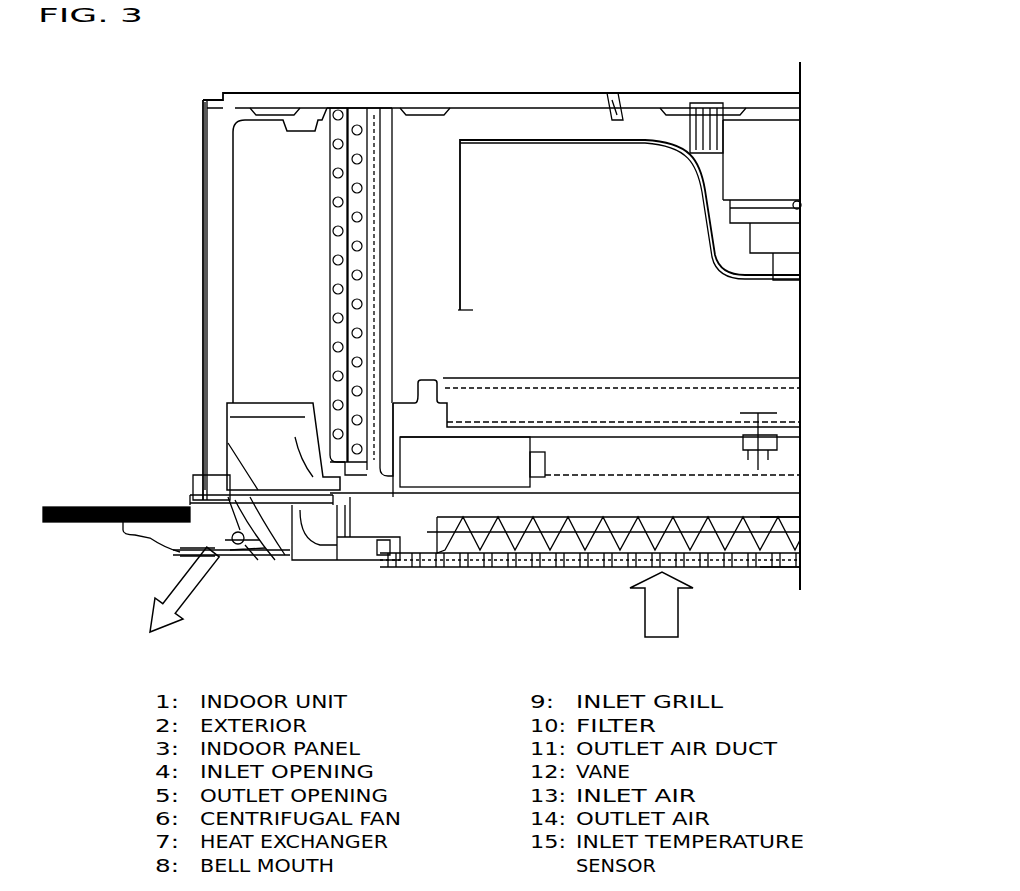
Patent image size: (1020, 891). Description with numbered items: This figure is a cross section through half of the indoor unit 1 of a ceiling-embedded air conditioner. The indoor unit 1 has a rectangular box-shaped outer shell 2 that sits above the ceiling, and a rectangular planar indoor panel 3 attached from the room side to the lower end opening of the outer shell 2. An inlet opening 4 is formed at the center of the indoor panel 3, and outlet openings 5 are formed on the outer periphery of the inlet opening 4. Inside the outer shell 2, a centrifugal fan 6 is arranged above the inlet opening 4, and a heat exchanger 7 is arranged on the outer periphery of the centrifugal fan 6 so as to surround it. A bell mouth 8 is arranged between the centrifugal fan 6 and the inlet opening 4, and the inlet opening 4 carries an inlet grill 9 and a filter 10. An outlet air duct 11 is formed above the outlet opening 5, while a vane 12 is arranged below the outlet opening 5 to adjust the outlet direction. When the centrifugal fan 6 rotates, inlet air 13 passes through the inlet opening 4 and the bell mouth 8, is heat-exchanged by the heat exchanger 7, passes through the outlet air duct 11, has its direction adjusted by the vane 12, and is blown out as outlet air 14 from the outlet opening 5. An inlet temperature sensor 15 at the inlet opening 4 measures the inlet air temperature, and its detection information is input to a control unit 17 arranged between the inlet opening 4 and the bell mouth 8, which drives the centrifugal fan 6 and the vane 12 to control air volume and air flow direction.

The indoor unit 1 is at (275, 95).
The outer shell 2 is at (203, 193).
The indoor panel 3 is at (313, 560).
The inlet opening 4 is at (793, 523).
The outlet opening 5 is at (180, 552).
The centrifugal fan 6 is at (593, 237).
The heat exchanger 7 is at (338, 105).
The bell mouth 8 is at (613, 405).
The inlet grill 9 is at (493, 567).
The filter 10 is at (458, 540).
The outlet air duct 11 is at (255, 445).
The vane 12 is at (243, 560).
The inlet air 13 is at (663, 622).
The outlet air 14 is at (173, 600).
The inlet temperature sensor 15 is at (538, 468).
The control unit 17 is at (427, 463).